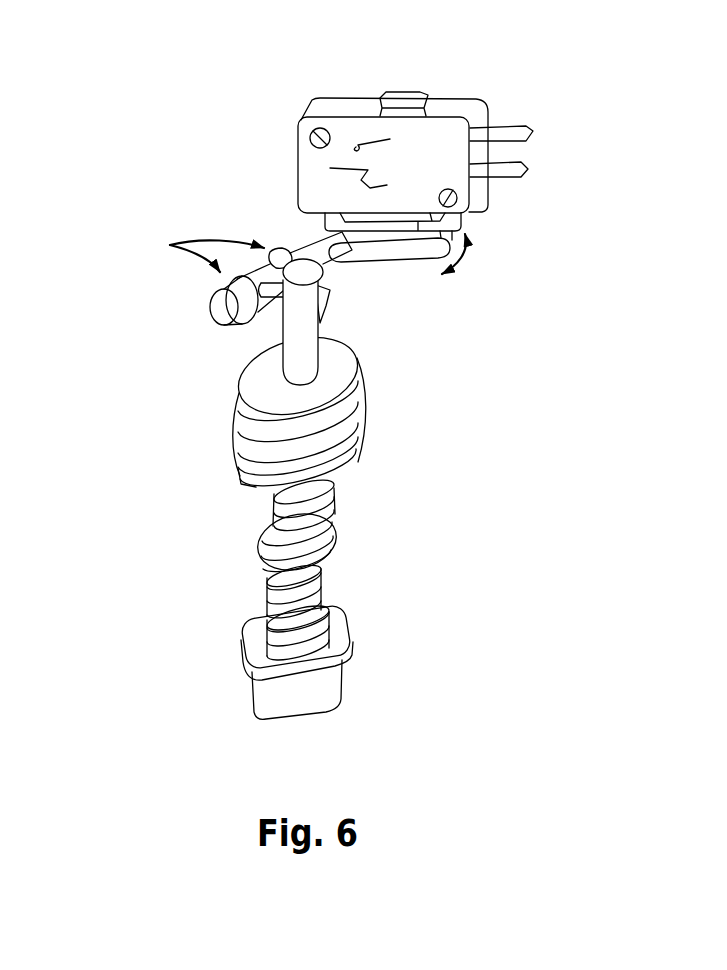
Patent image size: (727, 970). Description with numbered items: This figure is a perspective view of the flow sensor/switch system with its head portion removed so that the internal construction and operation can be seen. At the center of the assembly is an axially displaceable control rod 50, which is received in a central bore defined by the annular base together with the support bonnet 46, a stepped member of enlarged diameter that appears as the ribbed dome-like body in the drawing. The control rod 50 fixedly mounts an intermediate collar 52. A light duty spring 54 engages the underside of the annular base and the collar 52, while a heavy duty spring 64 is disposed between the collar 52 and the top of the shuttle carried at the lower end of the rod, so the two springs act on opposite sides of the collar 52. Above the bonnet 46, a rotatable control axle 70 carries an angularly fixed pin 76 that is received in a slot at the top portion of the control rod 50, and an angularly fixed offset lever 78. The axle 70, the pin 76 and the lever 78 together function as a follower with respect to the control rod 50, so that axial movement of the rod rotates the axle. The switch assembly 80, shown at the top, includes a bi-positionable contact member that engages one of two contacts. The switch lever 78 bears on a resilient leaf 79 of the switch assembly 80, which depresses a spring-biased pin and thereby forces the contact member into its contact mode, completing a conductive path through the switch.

The switch assembly 80 is at (353, 86).
The resilient leaf 79 is at (463, 222).
The offset lever 78 is at (423, 265).
The pin 76 is at (336, 293).
The control rod 50 is at (302, 330).
The rotatable control axle 70 is at (305, 236).
The support bonnet 46 is at (230, 383).
The light duty spring 54 is at (332, 491).
The intermediate collar 52 is at (260, 538).
The heavy duty spring 64 is at (322, 584).